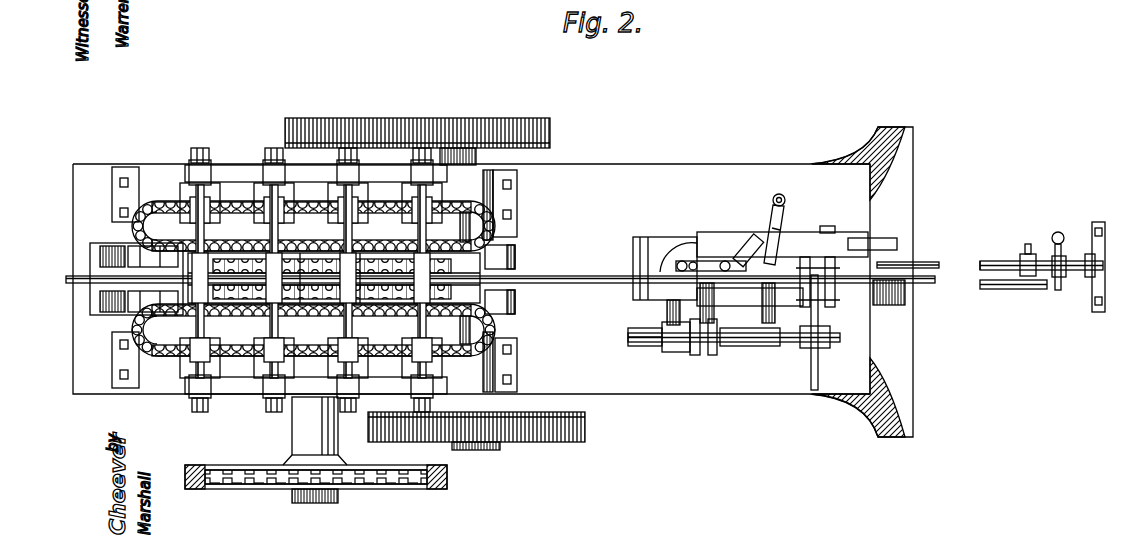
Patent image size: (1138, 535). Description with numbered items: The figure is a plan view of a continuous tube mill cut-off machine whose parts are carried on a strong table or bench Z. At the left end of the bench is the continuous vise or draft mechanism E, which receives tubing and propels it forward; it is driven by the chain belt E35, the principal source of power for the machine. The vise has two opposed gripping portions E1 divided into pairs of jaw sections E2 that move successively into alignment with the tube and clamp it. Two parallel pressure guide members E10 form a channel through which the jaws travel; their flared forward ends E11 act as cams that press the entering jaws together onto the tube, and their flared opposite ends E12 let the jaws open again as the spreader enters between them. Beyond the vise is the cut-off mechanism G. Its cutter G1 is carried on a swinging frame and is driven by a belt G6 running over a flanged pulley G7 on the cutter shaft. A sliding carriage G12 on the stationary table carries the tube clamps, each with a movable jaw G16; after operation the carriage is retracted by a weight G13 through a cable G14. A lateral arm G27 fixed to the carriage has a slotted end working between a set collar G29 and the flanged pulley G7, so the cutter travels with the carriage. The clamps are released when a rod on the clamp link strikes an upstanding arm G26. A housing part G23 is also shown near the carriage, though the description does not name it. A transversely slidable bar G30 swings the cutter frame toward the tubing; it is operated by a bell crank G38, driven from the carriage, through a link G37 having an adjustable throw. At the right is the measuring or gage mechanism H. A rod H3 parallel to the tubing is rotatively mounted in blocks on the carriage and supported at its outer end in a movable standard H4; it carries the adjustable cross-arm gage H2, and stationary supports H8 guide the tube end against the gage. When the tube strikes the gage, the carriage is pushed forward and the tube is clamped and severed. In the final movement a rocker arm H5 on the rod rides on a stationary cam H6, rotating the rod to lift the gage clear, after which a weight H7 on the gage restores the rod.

The table or bench Z is at (622, 395).
The continuous vise or draft mechanism E is at (500, 284).
The gripping portion E1 is at (224, 258).
The jaw section E2 is at (300, 258).
The pressure guide member E10 is at (349, 279).
The forward end of pressure guide E11 is at (142, 222).
The opposite end of guide member E12 is at (478, 224).
The chain belt E35 is at (442, 491).
The cut-off mechanism G is at (767, 252).
The cutter G1 is at (813, 390).
The belt G6 is at (712, 355).
The flanged pulley G7 is at (695, 355).
The sliding carriage G12 is at (756, 258).
The weight G13 is at (672, 352).
The cable G14 is at (690, 262).
The movable jaw G16 is at (835, 300).
The gear housing G23 is at (660, 258).
The arm G26 is at (832, 224).
The lateral arm G27 is at (722, 308).
The set collar G29 is at (733, 346).
The transversely slidable bar G30 is at (780, 196).
The link G37 is at (776, 232).
The bell crank G38 is at (748, 245).
The measuring or gage mechanism H is at (1041, 235).
The gage H2 is at (1064, 258).
The rod H3 is at (985, 263).
The movable standard H4 is at (1090, 280).
The rocker arm H5 is at (900, 262).
The stationary cam H6 is at (890, 238).
The weight H7 is at (1068, 226).
The support or guide H8 is at (1026, 254).